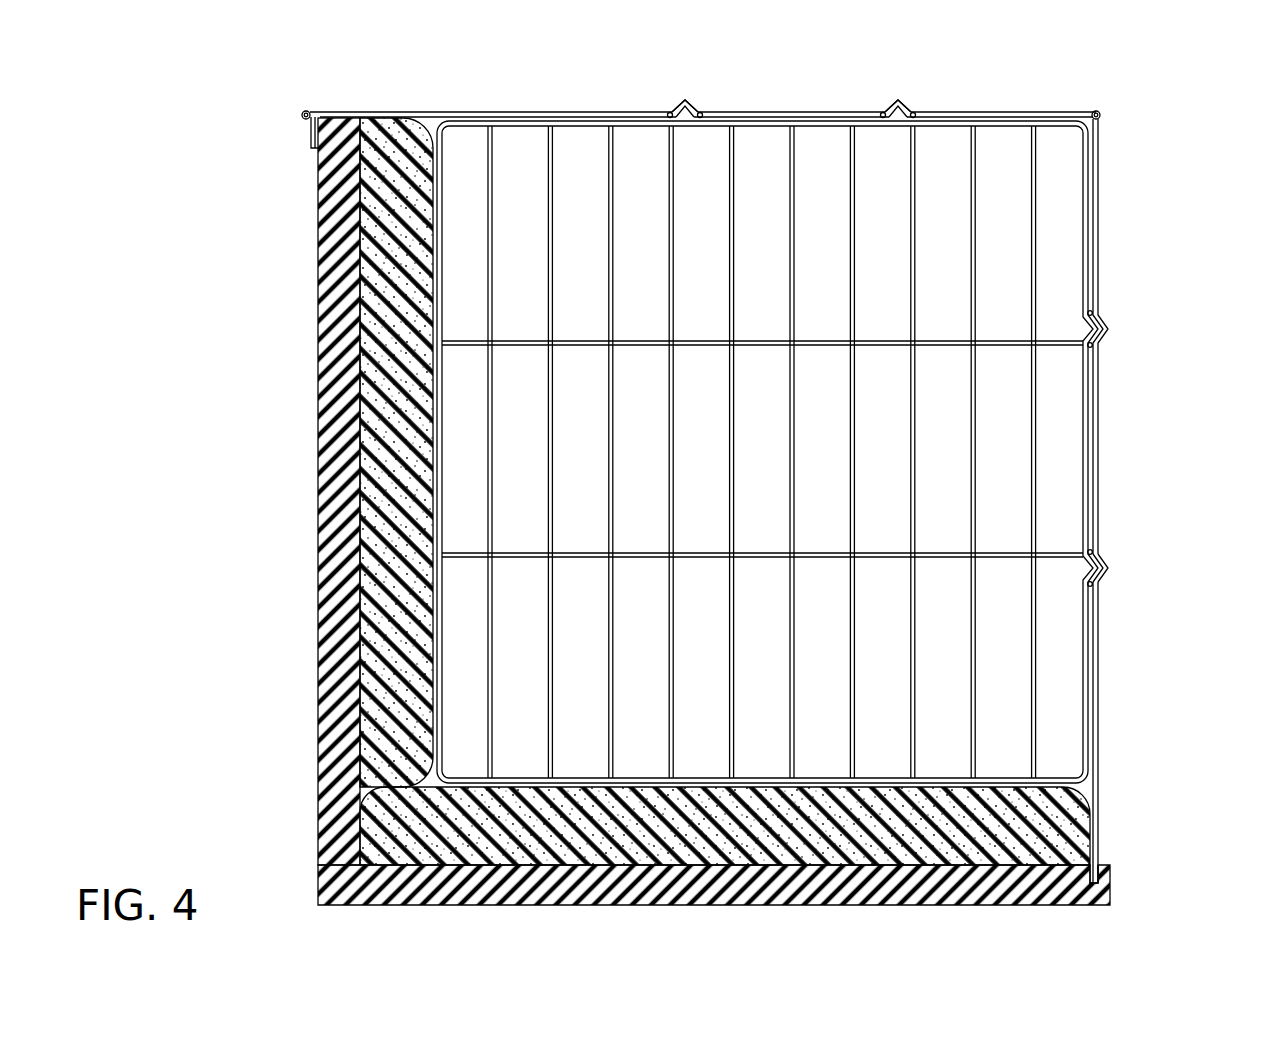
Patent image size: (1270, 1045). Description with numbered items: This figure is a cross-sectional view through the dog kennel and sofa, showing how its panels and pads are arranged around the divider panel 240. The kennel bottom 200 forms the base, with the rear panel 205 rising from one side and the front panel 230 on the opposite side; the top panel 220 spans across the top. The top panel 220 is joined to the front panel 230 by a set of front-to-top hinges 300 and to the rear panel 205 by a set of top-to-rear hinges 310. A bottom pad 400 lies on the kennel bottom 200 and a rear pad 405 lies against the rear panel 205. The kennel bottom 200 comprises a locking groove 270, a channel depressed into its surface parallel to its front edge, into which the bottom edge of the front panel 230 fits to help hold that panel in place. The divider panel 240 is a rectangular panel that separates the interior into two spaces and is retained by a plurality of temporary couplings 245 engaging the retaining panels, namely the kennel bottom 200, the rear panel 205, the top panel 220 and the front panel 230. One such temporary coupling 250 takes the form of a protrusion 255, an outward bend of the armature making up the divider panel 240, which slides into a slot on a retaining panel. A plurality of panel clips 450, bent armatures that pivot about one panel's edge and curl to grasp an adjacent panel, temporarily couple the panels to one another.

The kennel bottom 200 is at (1062, 905).
The rear panel 205 is at (318, 577).
The top panel 220 is at (957, 110).
The front panel 230 is at (1100, 236).
The divider panel 240 is at (1033, 458).
The plurality of temporary couplings 245 is at (704, 102).
The temporary coupling 250 is at (892, 106).
The protrusion 255 is at (679, 107).
The locking groove 270 is at (1100, 854).
The set of front-to-top hinges 300 is at (1102, 112).
The set of top-to-rear hinges 310 is at (303, 110).
The bottom pad 400 is at (1082, 802).
The rear pad 405 is at (415, 125).
The plurality of panel clips 450 is at (1106, 570).